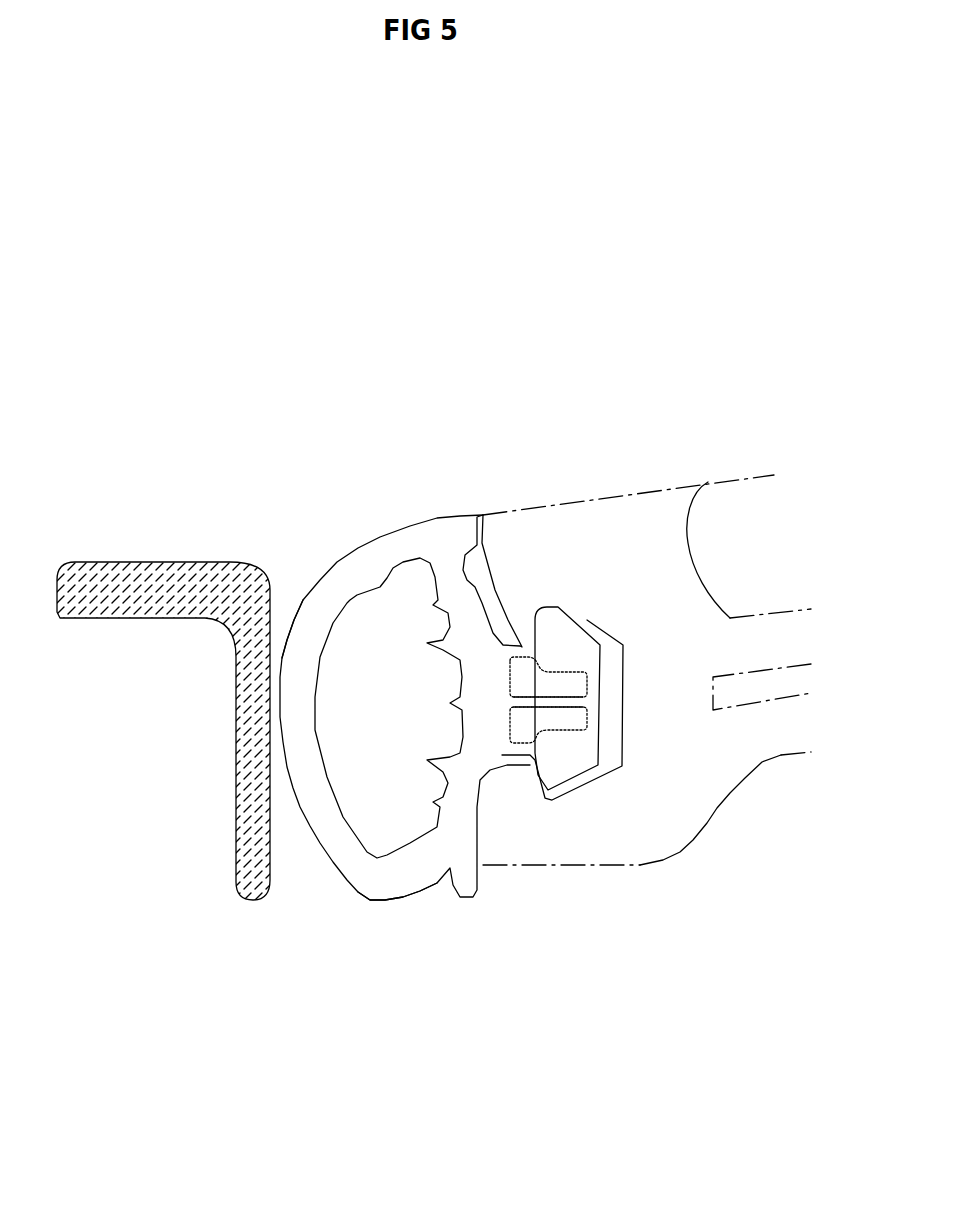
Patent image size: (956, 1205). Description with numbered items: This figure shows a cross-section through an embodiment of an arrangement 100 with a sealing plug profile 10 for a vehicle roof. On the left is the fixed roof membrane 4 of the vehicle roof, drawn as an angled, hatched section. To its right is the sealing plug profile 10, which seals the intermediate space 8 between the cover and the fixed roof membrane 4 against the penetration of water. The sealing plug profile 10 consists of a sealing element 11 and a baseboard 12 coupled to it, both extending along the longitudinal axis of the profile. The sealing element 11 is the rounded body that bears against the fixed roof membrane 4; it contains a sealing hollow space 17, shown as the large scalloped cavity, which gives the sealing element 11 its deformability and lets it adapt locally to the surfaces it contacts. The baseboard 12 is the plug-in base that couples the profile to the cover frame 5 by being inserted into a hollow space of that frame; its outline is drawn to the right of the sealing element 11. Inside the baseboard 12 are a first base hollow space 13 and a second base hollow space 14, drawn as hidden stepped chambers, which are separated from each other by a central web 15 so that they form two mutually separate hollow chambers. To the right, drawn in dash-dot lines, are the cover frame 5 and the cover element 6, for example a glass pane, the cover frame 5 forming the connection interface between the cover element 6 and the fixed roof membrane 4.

The arrangement 100 is at (213, 258).
The fixed roof membrane 4 is at (137, 600).
The cover frame 5 is at (701, 774).
The cover element 6 is at (761, 497).
The intermediate space 8 is at (285, 565).
The sealing plug profile 10 is at (368, 463).
The sealing element 11 is at (400, 870).
The baseboard 12 is at (577, 760).
The first base hollow space 13 is at (527, 677).
The second base hollow space 14 is at (535, 715).
The central web 15 is at (553, 700).
The sealing hollow space 17 is at (377, 797).